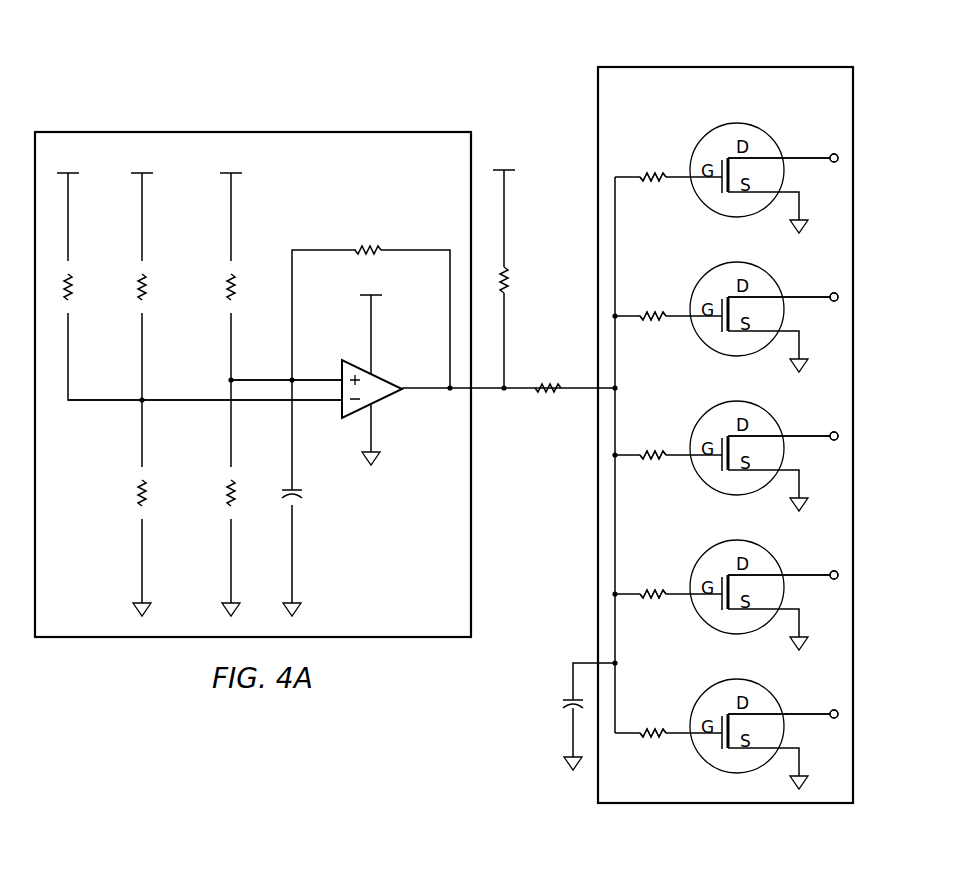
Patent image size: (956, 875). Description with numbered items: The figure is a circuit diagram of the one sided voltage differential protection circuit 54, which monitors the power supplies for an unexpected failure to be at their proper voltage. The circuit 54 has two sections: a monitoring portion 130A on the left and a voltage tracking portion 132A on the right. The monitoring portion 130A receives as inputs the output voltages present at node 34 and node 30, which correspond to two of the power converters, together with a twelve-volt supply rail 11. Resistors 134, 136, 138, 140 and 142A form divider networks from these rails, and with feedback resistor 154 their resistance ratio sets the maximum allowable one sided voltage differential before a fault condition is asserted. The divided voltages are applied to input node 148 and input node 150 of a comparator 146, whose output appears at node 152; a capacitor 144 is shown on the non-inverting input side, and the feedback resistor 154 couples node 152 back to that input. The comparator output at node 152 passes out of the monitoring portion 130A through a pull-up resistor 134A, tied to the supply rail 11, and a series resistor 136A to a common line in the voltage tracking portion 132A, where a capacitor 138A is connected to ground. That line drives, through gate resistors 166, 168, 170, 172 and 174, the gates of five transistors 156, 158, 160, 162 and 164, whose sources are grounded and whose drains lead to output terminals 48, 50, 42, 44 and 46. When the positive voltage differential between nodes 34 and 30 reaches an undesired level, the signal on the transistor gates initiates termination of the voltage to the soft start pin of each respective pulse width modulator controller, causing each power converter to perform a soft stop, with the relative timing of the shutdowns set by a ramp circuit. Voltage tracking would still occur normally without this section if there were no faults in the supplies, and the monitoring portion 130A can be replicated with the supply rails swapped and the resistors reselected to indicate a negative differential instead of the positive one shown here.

The one sided voltage differential protection circuit 54 is at (358, 78).
The monitoring portion 130A is at (190, 132).
The voltage tracking portion 132A is at (750, 67).
The +12V power supply 11 is at (82, 187).
The node 34 is at (155, 187).
The node 30 is at (243, 187).
The resistor 134 is at (75, 285).
The resistor 136 is at (135, 295).
The resistor 138 is at (225, 292).
The resistor 140 is at (135, 494).
The resistor 142A is at (226, 494).
The capacitor 144 is at (302, 495).
The comparator 146 is at (328, 378).
The input node 148 is at (312, 378).
The input node 150 is at (328, 400).
The node 152 is at (438, 390).
The resistor 154 is at (370, 245).
The pull-up resistor 134A is at (512, 287).
The resistor 136A is at (548, 393).
The capacitor 138A is at (562, 703).
The transistor 156 is at (697, 127).
The transistor 158 is at (697, 266).
The transistor 160 is at (697, 405).
The transistor 162 is at (697, 544).
The transistor 164 is at (697, 683).
The gate resistor 166 is at (652, 170).
The gate resistor 168 is at (652, 309).
The gate resistor 170 is at (652, 448).
The gate resistor 172 is at (652, 587).
The gate resistor 174 is at (652, 726).
The output terminal 48 is at (807, 157).
The output terminal 50 is at (807, 296).
The output terminal 42 is at (807, 435).
The output terminal 44 is at (807, 574).
The output terminal 46 is at (807, 713).